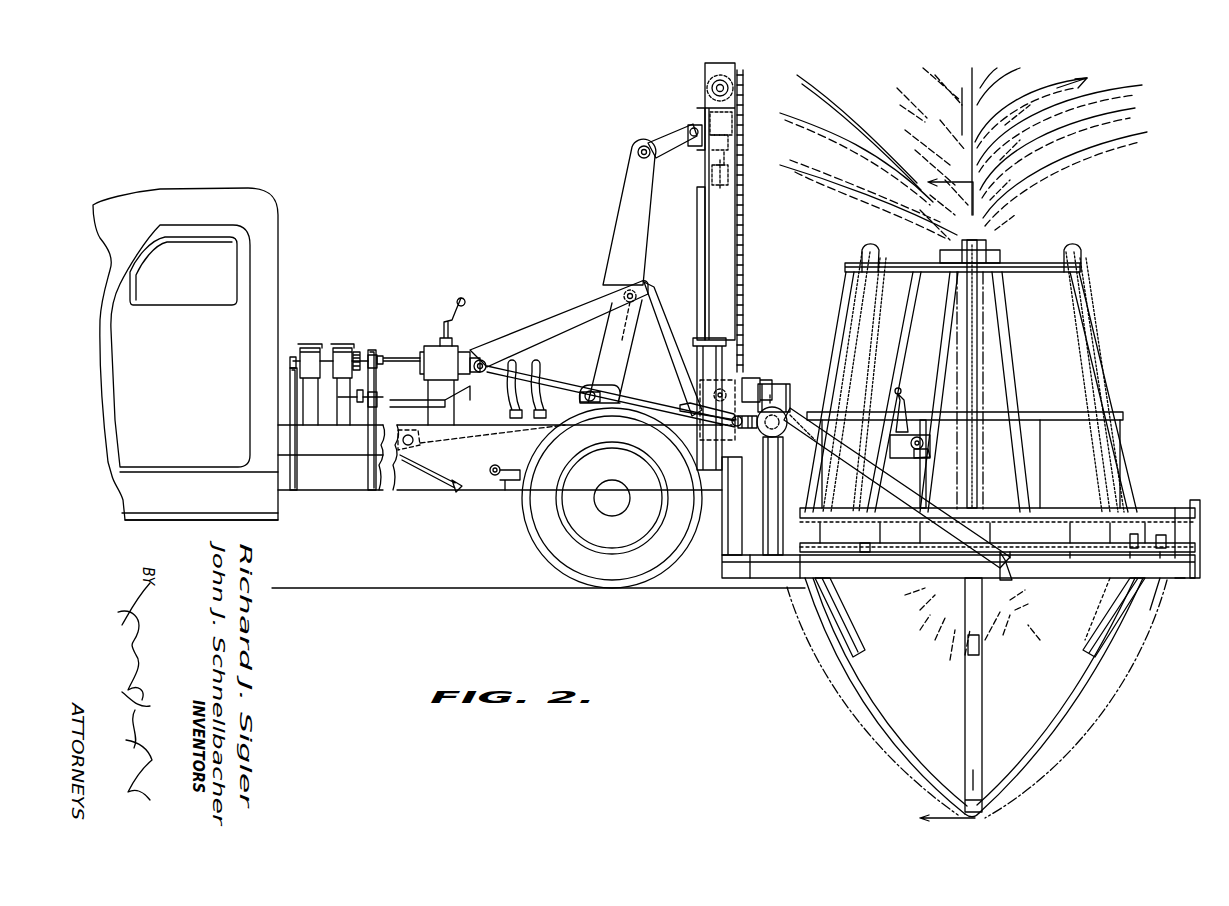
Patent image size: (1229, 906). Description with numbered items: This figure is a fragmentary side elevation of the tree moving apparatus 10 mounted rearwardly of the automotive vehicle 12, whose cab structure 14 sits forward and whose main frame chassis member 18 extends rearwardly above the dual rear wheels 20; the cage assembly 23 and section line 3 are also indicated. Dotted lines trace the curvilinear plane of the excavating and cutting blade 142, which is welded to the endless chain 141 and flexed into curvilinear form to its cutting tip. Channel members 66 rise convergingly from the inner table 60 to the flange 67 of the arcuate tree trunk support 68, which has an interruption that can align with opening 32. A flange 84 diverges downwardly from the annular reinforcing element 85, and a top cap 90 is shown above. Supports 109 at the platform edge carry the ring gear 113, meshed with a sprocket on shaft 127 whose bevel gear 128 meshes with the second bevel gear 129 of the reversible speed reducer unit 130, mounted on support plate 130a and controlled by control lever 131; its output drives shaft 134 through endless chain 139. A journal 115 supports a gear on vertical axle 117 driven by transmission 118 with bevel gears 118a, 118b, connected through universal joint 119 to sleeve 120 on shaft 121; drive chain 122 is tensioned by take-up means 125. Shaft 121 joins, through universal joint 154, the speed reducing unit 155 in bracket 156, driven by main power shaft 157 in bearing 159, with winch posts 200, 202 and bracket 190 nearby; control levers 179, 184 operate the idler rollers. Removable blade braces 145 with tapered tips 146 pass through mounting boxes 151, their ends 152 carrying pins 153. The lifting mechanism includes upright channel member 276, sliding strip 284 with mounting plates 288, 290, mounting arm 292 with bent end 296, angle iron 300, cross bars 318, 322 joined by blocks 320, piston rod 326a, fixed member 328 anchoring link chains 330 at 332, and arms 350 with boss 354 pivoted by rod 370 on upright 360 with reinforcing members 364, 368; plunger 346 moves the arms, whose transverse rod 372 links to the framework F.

The tree moving apparatus 10 is at (715, 602).
The automotive vehicle 12 is at (369, 499).
The cab structure 14 is at (228, 194).
The main frame chassis member 18 is at (486, 474).
The dual rear wheels 20 is at (532, 559).
The tree cage assembly 23 is at (1117, 236).
The opening 32 is at (1185, 580).
The inner table 60 is at (904, 565).
The channel members 66 is at (1016, 357).
The flange 67 is at (1032, 270).
The arcuate tree trunk support 68 is at (1060, 272).
The flange 84 is at (1055, 414).
The annular reinforcing element 85 is at (1040, 412).
The top cap 90 is at (1000, 256).
The supports 109 is at (1190, 500).
The ring gear 113 is at (1182, 515).
The journal 115 is at (760, 445).
The vertical axle 117 is at (770, 570).
The gear box transmission 118 is at (760, 428).
The bevel gear 118a is at (770, 395).
The bevel gear 118b is at (790, 414).
The universal joint 119 is at (722, 435).
The hollow rectangular sleeve 120 is at (720, 415).
The shaft 121 is at (655, 404).
The endless drive chain 122 is at (1046, 570).
The chain slack take-up means 125 is at (846, 578).
The shaft 127 is at (926, 470).
The bevel gear 128 is at (928, 454).
The second bevel gear 129 is at (920, 438).
The reversible speed reducer unit 130 is at (898, 450).
The support plate 130a is at (922, 432).
The control lever 131 is at (906, 408).
The shaft 134 is at (858, 542).
The endless chain 139 is at (905, 508).
The endless chains 141 is at (876, 314).
The excavating and cutting blade 142 is at (1080, 717).
The removable blade braces 145 is at (1122, 600).
The tapered lower tip 146 is at (1090, 650).
The mounting boxes 151 is at (1160, 605).
The brace end 152 is at (1160, 550).
The transverse pins 153 is at (1140, 546).
The universal joint 154 is at (478, 370).
The speed reducing unit 155 is at (460, 344).
The bracket 156 is at (440, 340).
The main power shaft 157 is at (400, 356).
The bearing 159 is at (295, 356).
The control lever 179 is at (514, 364).
The manually operable control lever 184 is at (570, 390).
The bracket 190 is at (452, 390).
The winch post 200 is at (368, 442).
The winch post 202 is at (297, 445).
The upright channel member 276 is at (740, 268).
The L-shaped support strip 284 is at (722, 560).
The first rectangular mounting plate 288 is at (750, 580).
The second mounting plate 290 is at (760, 378).
The mounting arm 292 is at (812, 438).
The inwardly bent end section 296 is at (1006, 572).
The angle iron 300 is at (708, 338).
The cross bar 318 is at (745, 110).
The spacing blocks 320 is at (744, 87).
The second sliding cross bar 322 is at (745, 142).
The piston rod 326a is at (740, 182).
The U-shaped structural member 328 is at (700, 146).
The link chains 330 is at (753, 136).
The chain securing point 332 is at (702, 108).
The extensible plunger 346 is at (556, 390).
The upwardly extending arm 350 is at (630, 238).
The boss 354 is at (640, 292).
The upright structural member 360 is at (634, 332).
The reinforcing structural member 364 is at (520, 338).
The second reinforcing structural member 368 is at (660, 330).
The cylindrical rod 370 is at (636, 292).
The transverse rod 372 is at (637, 152).
The framework F is at (760, 221).
The section line 3- 3 is at (937, 491).